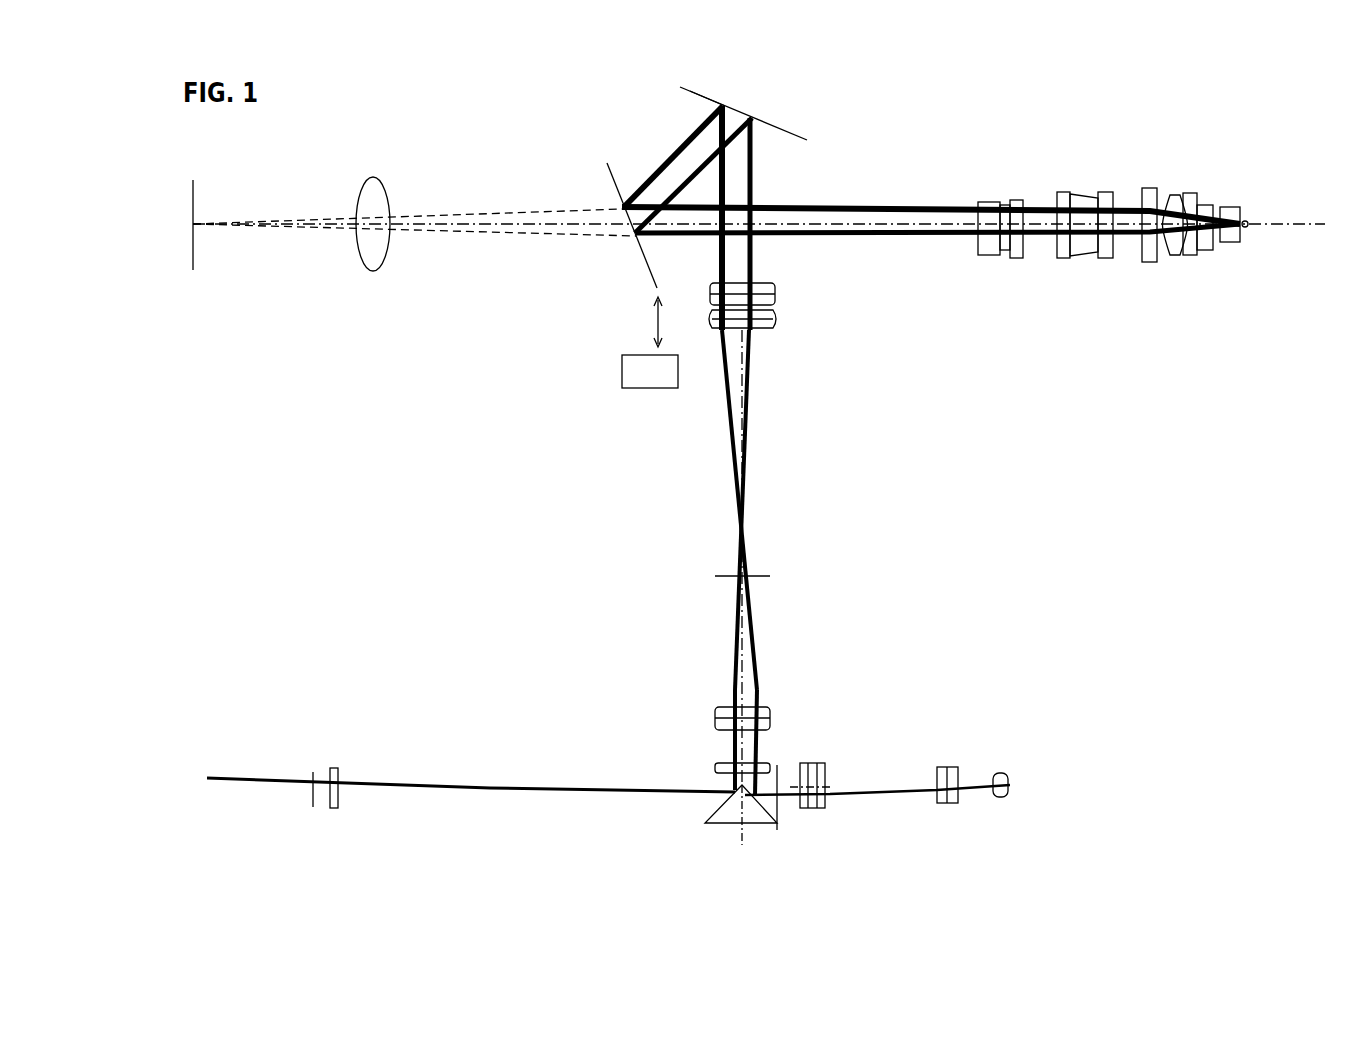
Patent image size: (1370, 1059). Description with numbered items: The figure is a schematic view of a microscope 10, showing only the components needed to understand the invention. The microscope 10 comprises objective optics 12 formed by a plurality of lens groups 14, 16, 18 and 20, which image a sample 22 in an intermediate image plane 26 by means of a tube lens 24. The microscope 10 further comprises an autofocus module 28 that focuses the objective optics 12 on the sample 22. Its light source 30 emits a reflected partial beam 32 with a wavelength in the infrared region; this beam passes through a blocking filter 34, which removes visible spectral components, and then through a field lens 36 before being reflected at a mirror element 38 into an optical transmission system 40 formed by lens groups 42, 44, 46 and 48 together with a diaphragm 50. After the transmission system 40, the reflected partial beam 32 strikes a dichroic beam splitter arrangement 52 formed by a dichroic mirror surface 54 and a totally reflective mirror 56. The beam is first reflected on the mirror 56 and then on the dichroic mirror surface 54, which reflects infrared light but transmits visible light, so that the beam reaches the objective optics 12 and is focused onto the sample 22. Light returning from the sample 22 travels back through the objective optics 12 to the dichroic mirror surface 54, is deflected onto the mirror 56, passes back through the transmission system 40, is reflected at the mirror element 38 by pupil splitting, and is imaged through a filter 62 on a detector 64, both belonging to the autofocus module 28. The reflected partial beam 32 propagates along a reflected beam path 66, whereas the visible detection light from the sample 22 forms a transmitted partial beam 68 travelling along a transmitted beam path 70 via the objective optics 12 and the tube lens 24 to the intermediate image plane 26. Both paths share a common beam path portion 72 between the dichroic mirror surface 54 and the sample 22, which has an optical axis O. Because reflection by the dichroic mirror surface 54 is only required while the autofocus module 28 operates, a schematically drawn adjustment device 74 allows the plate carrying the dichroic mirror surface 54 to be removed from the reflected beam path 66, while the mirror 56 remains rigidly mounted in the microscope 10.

The microscope 10 is at (937, 130).
The objective optics 12 is at (1101, 212).
The lens group 14 is at (1012, 258).
The lens group 16 is at (1082, 258).
The lens group 18 is at (1150, 262).
The lens group 20 is at (1190, 255).
The sample 22 is at (1245, 236).
The tube lens 24 is at (380, 268).
The intermediate image plane 26 is at (195, 262).
The autofocus module 28 is at (1140, 735).
The light source 30 is at (1003, 773).
The reflected partial beam 32 is at (752, 390).
The blocking filter 34 is at (948, 765).
The field lens 36 is at (825, 775).
The mirror element 38 is at (706, 812).
The optical transmission system 40 is at (645, 490).
The lens group 42 is at (715, 768).
The lens group 44 is at (715, 714).
The lens group 46 is at (776, 320).
The lens group 48 is at (776, 296).
The diaphragm 50 is at (762, 575).
The dichroic beam splitter arrangement 52 is at (740, 102).
The dichroic mirror surface 54 is at (607, 170).
The mirror 56 is at (690, 92).
The filter 62 is at (334, 768).
The detector 64 is at (311, 778).
The reflected beam path 66 is at (648, 170).
The transmitted partial beam 68 is at (478, 211).
The transmitted beam path 70 is at (568, 250).
The common beam path portion 72 is at (880, 195).
The adjustment device 74 is at (640, 400).
The optical axis O is at (957, 215).